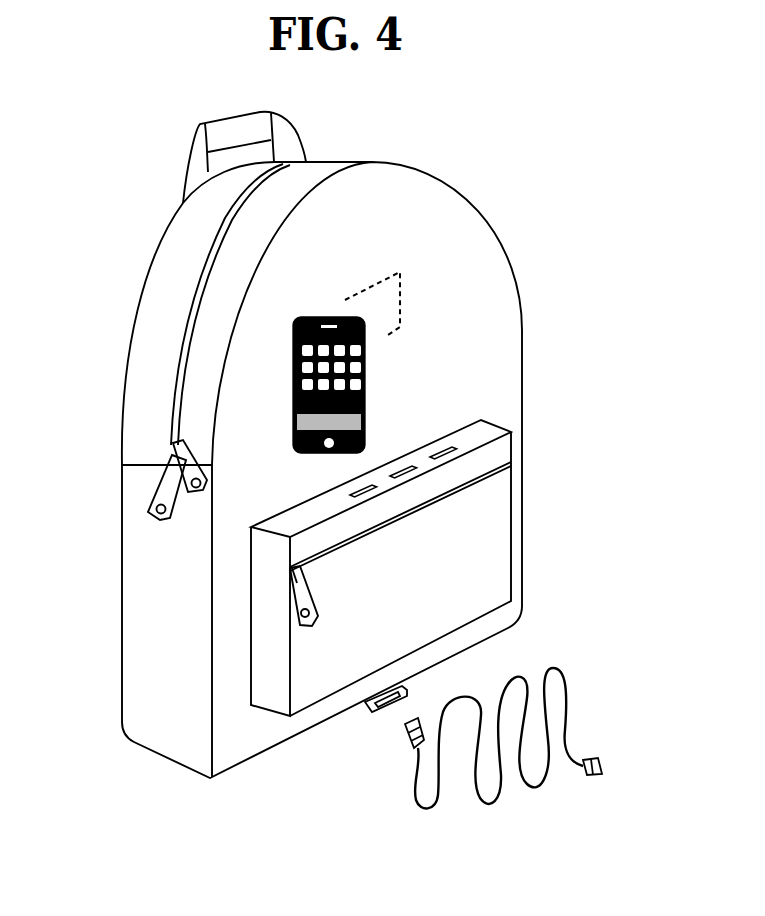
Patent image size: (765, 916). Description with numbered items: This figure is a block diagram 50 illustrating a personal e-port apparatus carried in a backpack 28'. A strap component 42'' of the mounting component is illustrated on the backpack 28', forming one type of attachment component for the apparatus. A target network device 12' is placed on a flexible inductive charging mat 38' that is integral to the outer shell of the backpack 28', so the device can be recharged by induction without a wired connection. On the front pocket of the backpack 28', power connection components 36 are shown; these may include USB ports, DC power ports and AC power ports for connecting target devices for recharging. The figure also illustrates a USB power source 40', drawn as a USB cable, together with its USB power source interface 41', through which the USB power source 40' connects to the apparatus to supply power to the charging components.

The block diagram 50 is at (609, 138).
The backpack 28' is at (322, 448).
The strap component 42'' is at (197, 147).
The flexible inductive charging mat 38' is at (409, 304).
The target network device 12' is at (301, 385).
The power connection components 36 is at (445, 448).
The USB power source interface 41' is at (355, 737).
The USB power source 40' is at (514, 735).